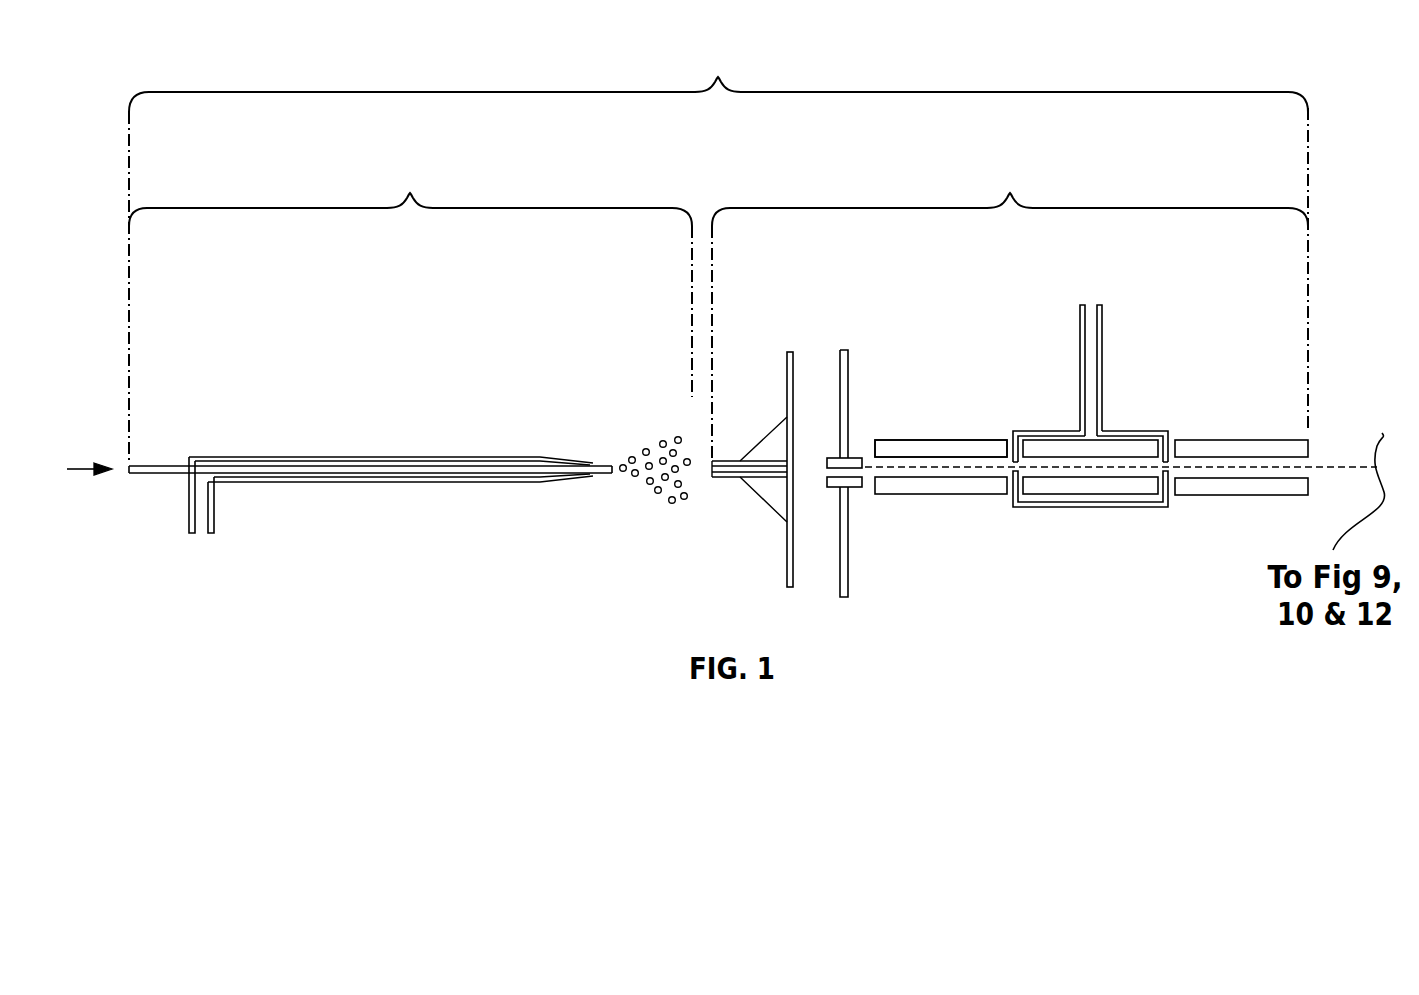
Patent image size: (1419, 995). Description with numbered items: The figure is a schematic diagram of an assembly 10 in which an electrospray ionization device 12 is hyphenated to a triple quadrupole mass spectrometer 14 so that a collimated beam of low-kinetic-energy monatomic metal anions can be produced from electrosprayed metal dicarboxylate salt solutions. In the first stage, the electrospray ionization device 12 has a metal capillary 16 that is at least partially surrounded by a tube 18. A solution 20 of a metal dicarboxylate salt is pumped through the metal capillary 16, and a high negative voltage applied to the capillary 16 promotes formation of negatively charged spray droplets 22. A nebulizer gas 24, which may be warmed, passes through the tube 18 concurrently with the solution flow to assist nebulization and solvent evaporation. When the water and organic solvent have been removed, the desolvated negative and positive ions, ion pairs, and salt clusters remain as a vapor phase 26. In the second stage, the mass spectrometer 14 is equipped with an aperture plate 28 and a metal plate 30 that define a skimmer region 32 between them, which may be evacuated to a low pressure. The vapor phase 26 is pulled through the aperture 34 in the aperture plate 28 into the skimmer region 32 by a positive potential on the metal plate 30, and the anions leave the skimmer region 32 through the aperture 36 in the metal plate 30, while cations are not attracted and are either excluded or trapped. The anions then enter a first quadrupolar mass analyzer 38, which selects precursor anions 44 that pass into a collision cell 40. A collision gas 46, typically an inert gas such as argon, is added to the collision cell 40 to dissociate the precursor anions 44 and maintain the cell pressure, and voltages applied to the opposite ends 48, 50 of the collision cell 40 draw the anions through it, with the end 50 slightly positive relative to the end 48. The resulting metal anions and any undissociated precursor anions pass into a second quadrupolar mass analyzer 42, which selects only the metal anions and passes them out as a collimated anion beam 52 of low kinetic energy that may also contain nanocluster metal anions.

The assembly 10 is at (718, 251).
The electrospray ionization device 12 is at (410, 279).
The triple quadrupole mass spectrometer 14 is at (1010, 309).
The metal capillary 16 is at (348, 470).
The tube 18 is at (435, 457).
The solution 20 is at (80, 463).
The spray droplets 22 is at (633, 429).
The nebulizer gas 24 is at (203, 541).
The vapor phase 26 is at (703, 493).
The aperture plate 28 is at (763, 500).
The metal plate 30 is at (848, 367).
The skimmer region 32 is at (812, 350).
The aperture 34 is at (712, 464).
The aperture 36 is at (827, 474).
The first quadrupolar mass analyzer 38 is at (927, 440).
The collision cell 40 is at (1050, 495).
The second quadrupolar mass analyzer 42 is at (1250, 440).
The precursor anions 44 is at (962, 462).
The collision gas 46 is at (1093, 307).
The first end of collision cell 48 is at (1055, 440).
The second end of collision cell 50 is at (1160, 447).
The collimated anion beam 52 is at (1332, 466).